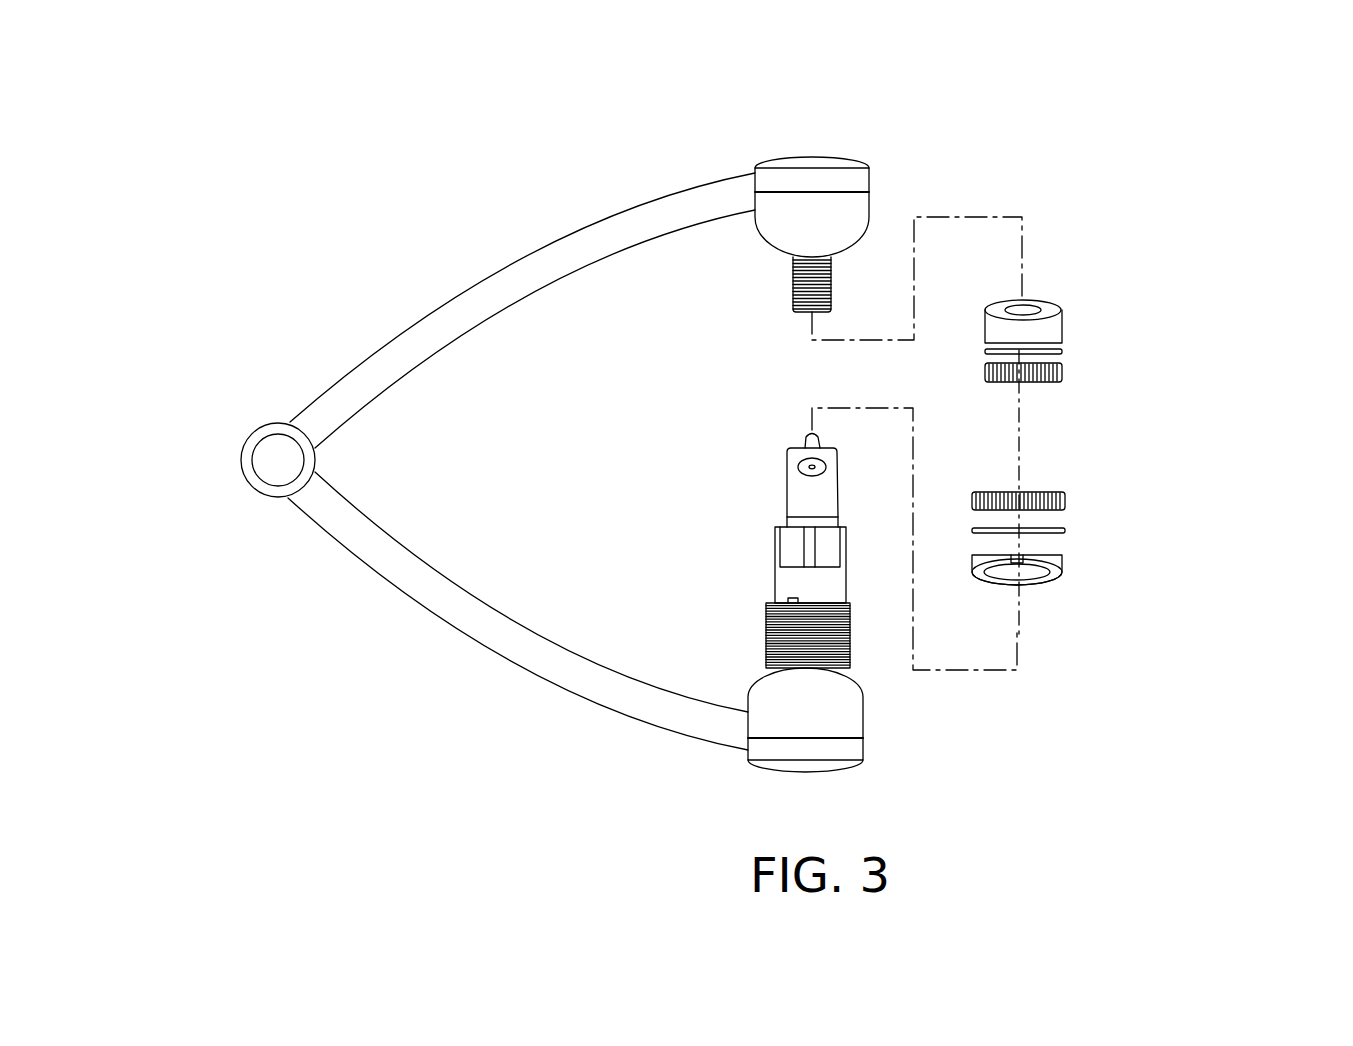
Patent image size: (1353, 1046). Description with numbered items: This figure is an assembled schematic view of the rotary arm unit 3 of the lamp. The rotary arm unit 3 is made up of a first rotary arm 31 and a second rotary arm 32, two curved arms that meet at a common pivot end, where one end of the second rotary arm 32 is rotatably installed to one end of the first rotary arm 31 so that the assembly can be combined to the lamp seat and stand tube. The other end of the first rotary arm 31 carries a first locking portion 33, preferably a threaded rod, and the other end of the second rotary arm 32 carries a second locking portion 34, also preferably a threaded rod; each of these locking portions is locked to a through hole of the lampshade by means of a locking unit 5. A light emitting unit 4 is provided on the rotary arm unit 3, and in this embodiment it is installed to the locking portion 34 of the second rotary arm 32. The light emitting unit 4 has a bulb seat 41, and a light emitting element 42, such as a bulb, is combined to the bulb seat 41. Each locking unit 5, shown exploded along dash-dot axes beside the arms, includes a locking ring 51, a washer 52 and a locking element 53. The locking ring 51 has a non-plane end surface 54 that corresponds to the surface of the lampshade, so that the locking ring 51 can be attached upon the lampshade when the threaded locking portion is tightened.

The rotary arm unit 3 is at (263, 423).
The first rotary arm 31 is at (460, 307).
The second rotary arm 32 is at (386, 565).
The first locking portion 33 is at (773, 208).
The second locking portion 34 is at (843, 703).
The light emitting unit 4 is at (733, 516).
The bulb seat 41 is at (796, 565).
The light emitting element 42 is at (776, 518).
The locking unit 5 is at (1137, 379).
The locking ring 51 is at (1062, 329).
The washer 52 is at (1058, 352).
The locking element 53 is at (1053, 381).
The non-plane end surface 54 is at (1051, 308).